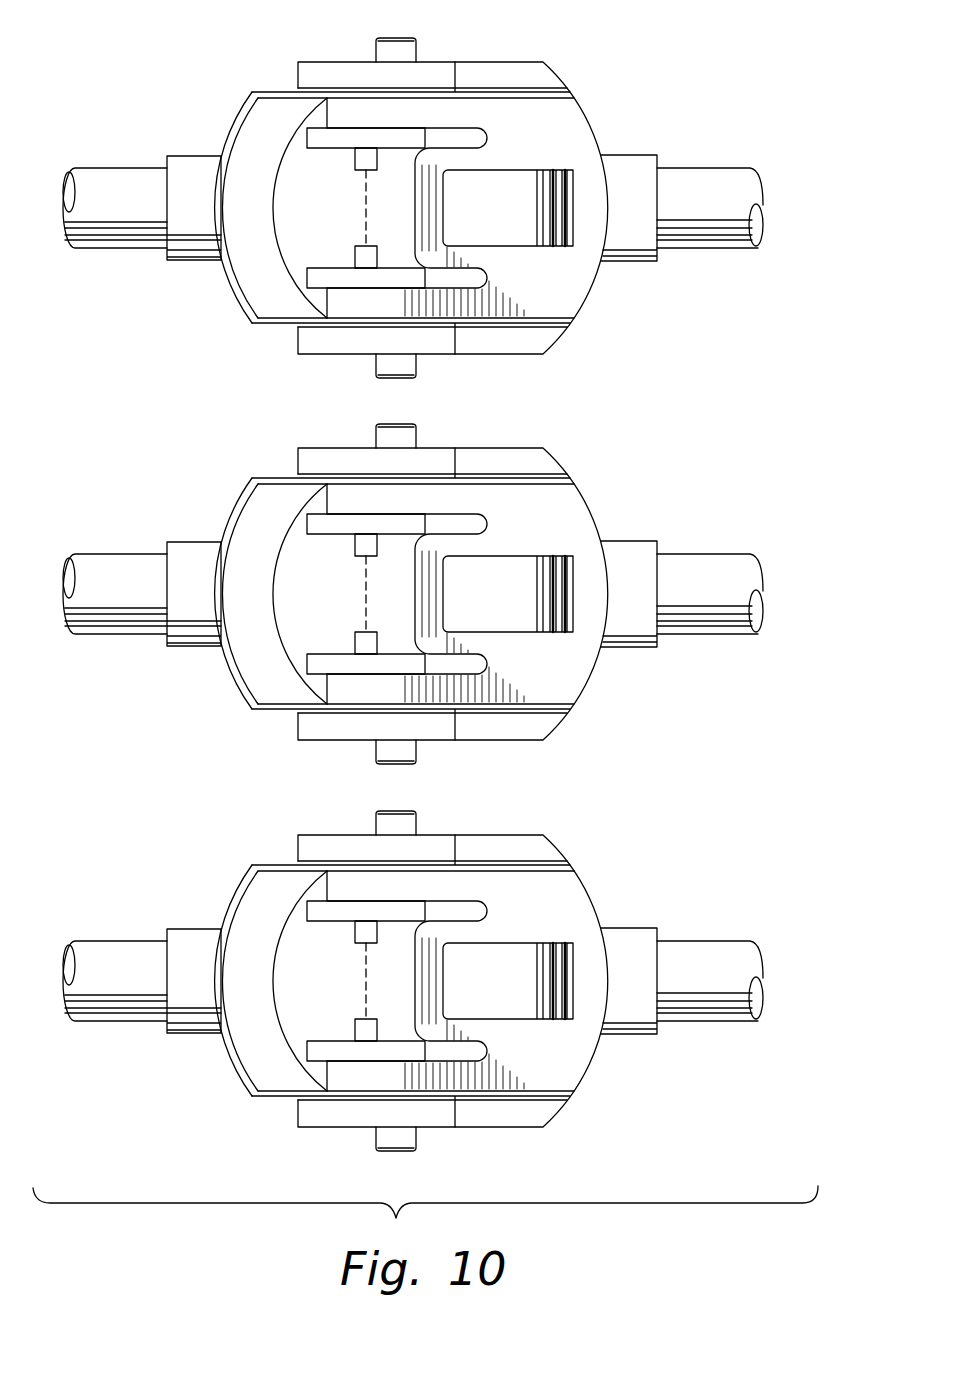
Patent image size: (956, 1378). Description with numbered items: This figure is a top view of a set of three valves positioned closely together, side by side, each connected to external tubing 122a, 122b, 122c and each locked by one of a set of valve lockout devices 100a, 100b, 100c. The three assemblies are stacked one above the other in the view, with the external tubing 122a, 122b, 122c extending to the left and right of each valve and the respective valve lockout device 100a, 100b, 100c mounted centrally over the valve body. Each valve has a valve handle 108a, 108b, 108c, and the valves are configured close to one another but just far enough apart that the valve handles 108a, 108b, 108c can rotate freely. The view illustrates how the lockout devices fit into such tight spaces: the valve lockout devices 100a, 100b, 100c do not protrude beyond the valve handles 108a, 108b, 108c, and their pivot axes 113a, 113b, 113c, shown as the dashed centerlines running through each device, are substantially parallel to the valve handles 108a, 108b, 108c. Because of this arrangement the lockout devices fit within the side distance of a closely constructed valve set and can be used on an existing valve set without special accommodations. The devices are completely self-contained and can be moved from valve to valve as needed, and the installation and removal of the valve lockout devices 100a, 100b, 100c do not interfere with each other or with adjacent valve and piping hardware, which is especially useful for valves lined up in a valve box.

The valve lockout device 100a is at (590, 303).
The valve lockout device 100b is at (413, 581).
The valve lockout device 100c is at (413, 968).
The valve handle 108a is at (400, 40).
The valve handle 108b is at (435, 423).
The valve handle 108c is at (435, 810).
The pivot axis 113a is at (364, 226).
The pivot axis 113b is at (330, 594).
The pivot axis 113c is at (330, 981).
The external tubing 122a is at (100, 168).
The external tubing 122b is at (142, 567).
The external tubing 122c is at (142, 954).